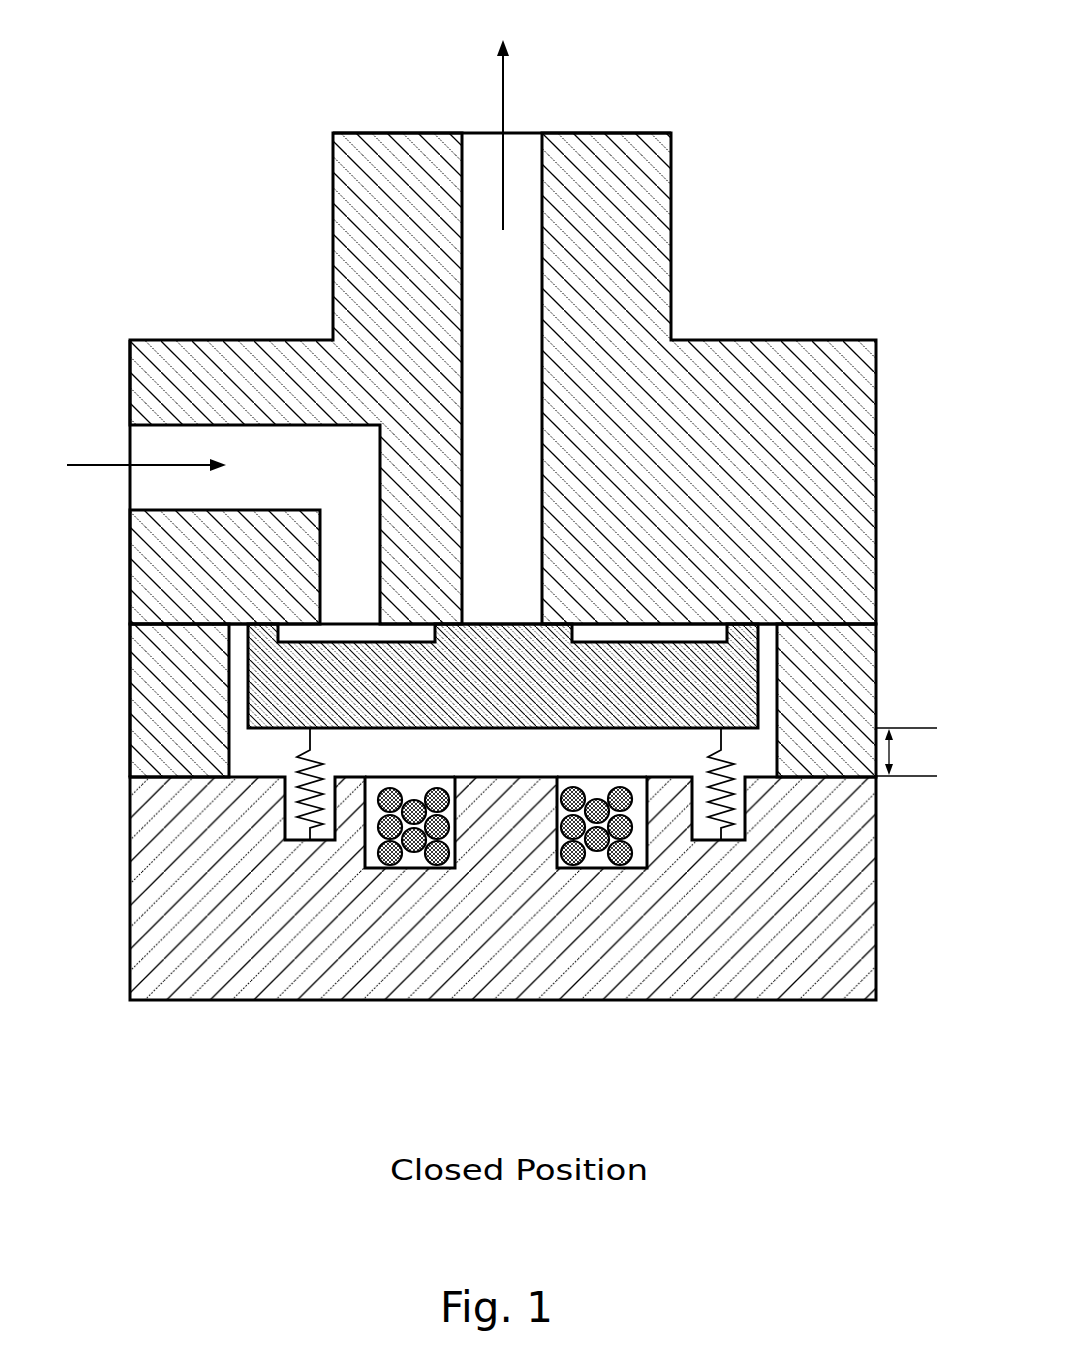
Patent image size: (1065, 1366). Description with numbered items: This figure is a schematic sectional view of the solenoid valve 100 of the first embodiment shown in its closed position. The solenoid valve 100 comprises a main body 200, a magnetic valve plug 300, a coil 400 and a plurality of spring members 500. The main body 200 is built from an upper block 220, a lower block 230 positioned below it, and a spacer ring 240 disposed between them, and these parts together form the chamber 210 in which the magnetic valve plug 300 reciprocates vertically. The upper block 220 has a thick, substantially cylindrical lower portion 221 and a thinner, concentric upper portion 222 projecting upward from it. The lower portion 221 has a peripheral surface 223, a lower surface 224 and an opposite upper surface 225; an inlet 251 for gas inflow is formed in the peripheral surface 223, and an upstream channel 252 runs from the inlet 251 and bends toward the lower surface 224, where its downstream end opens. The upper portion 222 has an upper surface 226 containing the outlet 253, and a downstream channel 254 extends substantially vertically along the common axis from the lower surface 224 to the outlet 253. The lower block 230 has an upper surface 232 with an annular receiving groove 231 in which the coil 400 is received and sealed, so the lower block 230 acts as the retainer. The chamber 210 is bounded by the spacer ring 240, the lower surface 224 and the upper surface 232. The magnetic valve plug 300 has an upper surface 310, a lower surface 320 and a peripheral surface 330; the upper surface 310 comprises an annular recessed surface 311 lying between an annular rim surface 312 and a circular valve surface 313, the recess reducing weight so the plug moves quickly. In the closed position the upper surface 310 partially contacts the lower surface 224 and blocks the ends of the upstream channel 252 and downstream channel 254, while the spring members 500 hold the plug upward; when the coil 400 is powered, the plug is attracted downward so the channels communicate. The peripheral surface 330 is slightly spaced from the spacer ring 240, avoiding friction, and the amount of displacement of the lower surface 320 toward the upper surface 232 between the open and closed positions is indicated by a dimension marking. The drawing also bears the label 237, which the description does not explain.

The solenoid valve 100 is at (831, 160).
The main body 200 is at (877, 337).
The chamber 210 is at (250, 750).
The upper block 220 is at (203, 73).
The lower portion 221 is at (258, 340).
The upper portion 222 is at (331, 163).
The peripheral surface 223 is at (130, 556).
The lower surface 224 is at (226, 645).
The upper surface 225 is at (188, 340).
The upper surface 226 is at (628, 133).
The lower block 230 is at (877, 1002).
The receiving groove 231 is at (372, 777).
The upper surface 232 is at (240, 770).
The base support surface 237 is at (520, 768).
The spacer ring 240 is at (877, 662).
The inlet 251 is at (128, 425).
The upstream channel 252 is at (160, 487).
The outlet 253 is at (527, 133).
The downstream channel 254 is at (473, 172).
The magnetic valve plug 300 is at (770, 743).
The upper surface 310 is at (308, 640).
The recessed surface 311 is at (690, 640).
The rim surface 312 is at (746, 628).
The valve surface 313 is at (522, 617).
The lower surface 320 is at (433, 722).
The peripheral surface 330 is at (240, 672).
The coil 400 is at (635, 857).
The spring members 500 is at (296, 800).